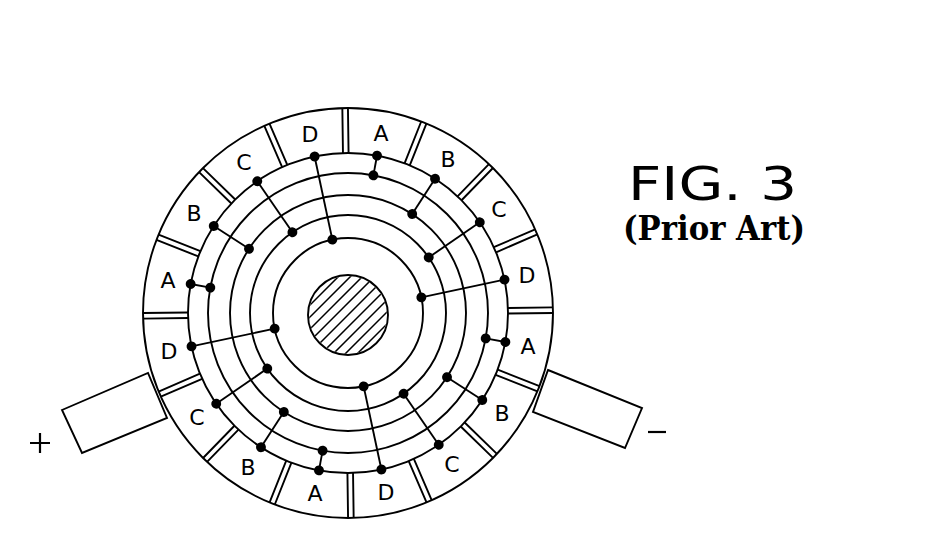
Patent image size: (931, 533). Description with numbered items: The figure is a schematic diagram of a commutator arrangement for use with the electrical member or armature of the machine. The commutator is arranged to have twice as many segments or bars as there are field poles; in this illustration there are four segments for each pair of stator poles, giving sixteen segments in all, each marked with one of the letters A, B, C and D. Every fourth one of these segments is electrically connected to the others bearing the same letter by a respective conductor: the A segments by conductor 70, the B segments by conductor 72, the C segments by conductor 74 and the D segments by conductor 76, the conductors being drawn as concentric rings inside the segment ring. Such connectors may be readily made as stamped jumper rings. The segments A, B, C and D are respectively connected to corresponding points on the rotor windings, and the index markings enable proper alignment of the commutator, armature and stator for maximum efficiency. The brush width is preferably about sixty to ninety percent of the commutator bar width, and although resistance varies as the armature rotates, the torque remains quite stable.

The conductor 70 is at (380, 166).
The conductor 72 is at (438, 187).
The conductor 74 is at (485, 244).
The conductor 76 is at (497, 280).